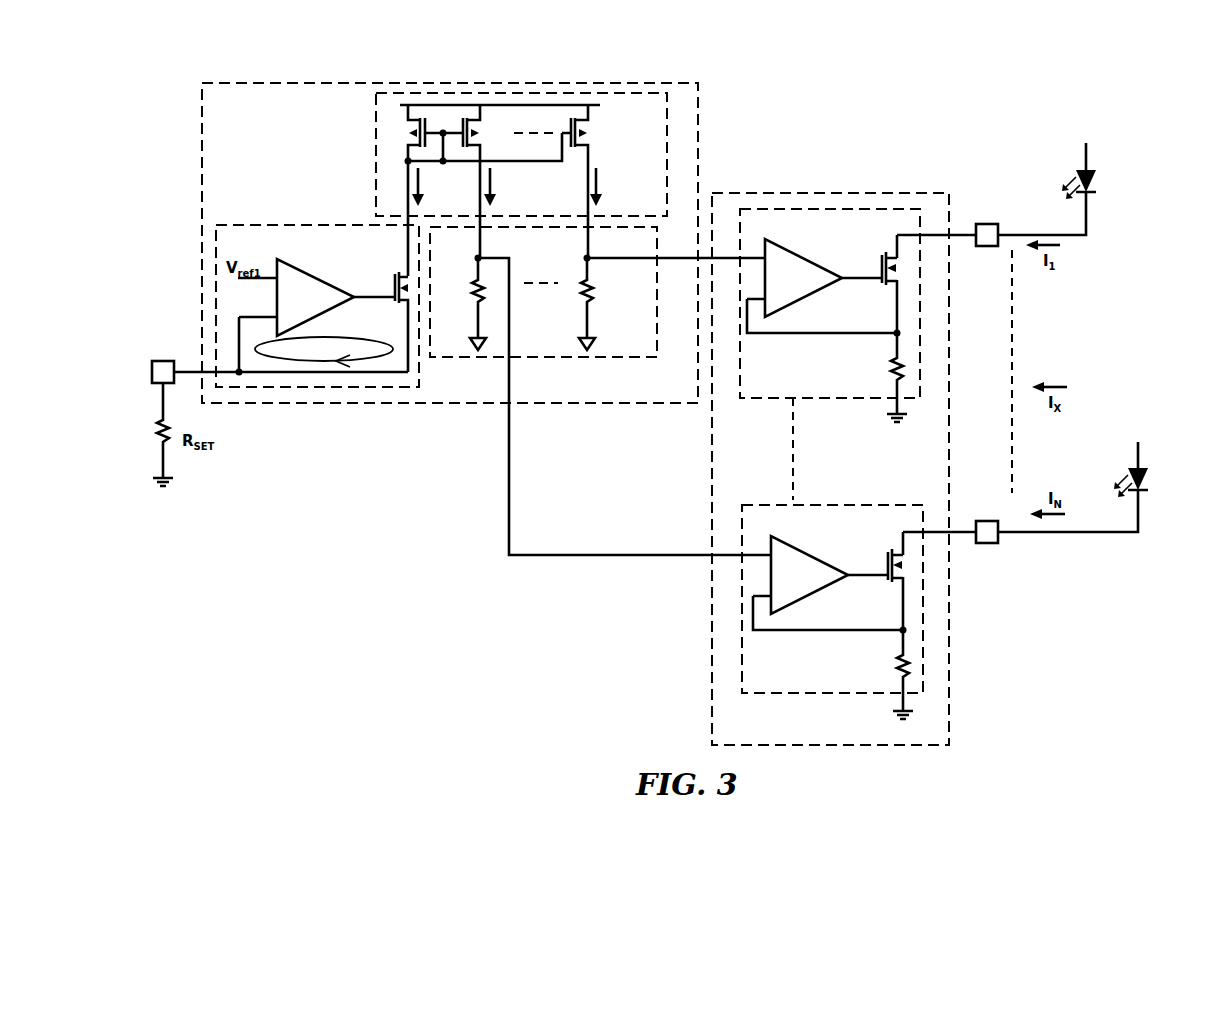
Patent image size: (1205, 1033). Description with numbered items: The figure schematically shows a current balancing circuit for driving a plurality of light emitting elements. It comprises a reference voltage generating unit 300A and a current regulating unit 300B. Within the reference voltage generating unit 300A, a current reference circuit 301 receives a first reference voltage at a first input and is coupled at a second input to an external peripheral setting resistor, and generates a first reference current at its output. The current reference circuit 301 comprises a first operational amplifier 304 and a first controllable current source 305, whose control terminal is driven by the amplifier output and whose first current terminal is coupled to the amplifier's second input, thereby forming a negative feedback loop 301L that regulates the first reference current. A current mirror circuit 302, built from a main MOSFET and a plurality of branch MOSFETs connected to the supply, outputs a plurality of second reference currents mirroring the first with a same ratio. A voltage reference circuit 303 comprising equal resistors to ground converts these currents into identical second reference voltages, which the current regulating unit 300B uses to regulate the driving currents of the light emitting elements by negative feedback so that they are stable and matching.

The reference voltage generating unit 300A is at (528, 83).
The current regulating unit 300B is at (848, 192).
The current reference circuit 301 is at (276, 225).
The negative feedback loop 301L is at (324, 352).
The current mirror circuit 302 is at (376, 158).
The voltage reference circuit 303 is at (575, 360).
The first operational amplifier 304 is at (303, 268).
The first controllable current source 305 is at (393, 282).